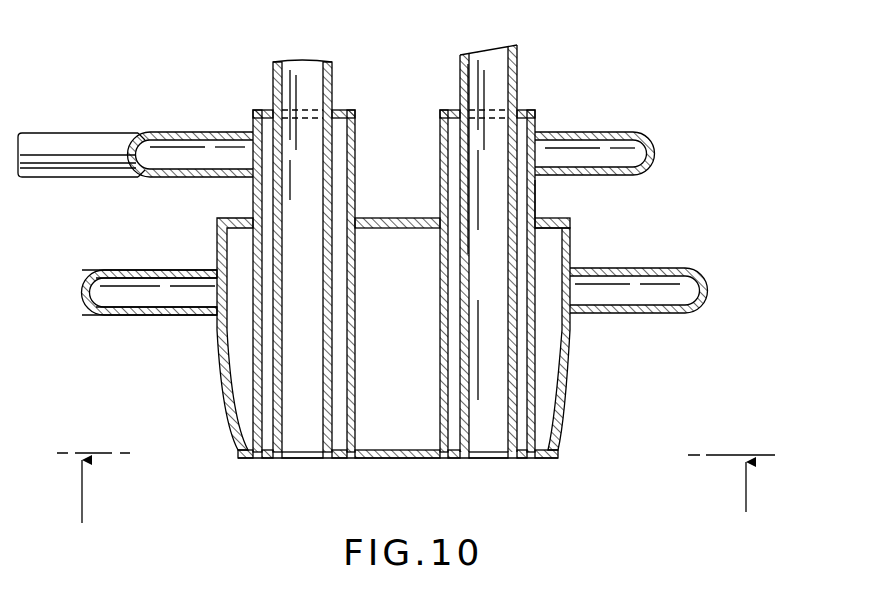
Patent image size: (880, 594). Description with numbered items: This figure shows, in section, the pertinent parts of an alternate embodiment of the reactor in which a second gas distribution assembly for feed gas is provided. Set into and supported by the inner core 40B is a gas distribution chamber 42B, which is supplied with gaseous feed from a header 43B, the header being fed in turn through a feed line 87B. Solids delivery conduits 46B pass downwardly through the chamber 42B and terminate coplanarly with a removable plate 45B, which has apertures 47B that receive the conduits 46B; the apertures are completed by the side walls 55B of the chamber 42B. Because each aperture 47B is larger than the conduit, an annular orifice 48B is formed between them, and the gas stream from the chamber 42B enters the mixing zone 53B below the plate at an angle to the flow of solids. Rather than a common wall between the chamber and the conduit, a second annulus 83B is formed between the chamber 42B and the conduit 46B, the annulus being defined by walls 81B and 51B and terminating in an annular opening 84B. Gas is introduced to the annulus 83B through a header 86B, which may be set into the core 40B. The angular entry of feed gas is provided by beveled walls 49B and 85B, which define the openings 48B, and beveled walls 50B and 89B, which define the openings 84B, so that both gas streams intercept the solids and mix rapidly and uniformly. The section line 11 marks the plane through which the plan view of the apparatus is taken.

The inner core 40B is at (192, 228).
The gas distribution chamber 42B is at (243, 339).
The header 43B is at (644, 266).
The removable plate 45B is at (401, 458).
The conduit 46B is at (320, 341).
The aperture 47B is at (304, 462).
The annular orifice 48B is at (256, 458).
The beveled wall 49B is at (540, 460).
The beveled wall 50B is at (514, 460).
The wall 51B is at (528, 240).
The mixing zone 53B is at (349, 503).
The side wall 55B is at (222, 406).
The wall 81B is at (536, 203).
The second annulus 83B is at (342, 178).
The annular opening 84B is at (272, 462).
The beveled wall 85B is at (560, 418).
The header 86B is at (657, 150).
The feed line 87B is at (84, 138).
The beveled wall 89B is at (520, 460).
The section line 11 is at (416, 468).